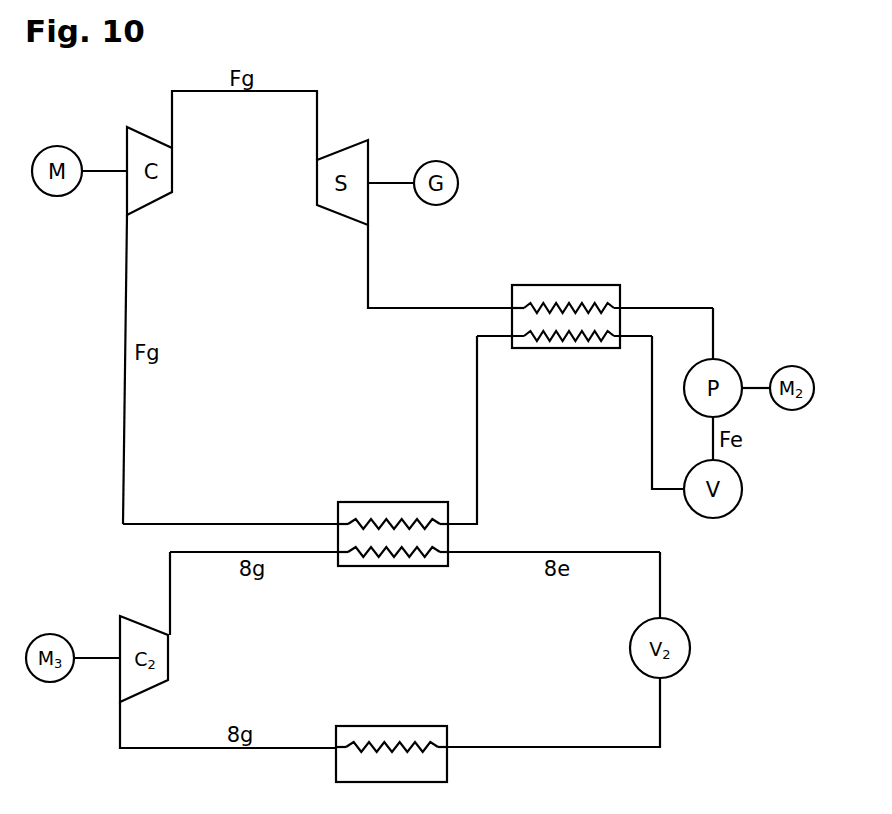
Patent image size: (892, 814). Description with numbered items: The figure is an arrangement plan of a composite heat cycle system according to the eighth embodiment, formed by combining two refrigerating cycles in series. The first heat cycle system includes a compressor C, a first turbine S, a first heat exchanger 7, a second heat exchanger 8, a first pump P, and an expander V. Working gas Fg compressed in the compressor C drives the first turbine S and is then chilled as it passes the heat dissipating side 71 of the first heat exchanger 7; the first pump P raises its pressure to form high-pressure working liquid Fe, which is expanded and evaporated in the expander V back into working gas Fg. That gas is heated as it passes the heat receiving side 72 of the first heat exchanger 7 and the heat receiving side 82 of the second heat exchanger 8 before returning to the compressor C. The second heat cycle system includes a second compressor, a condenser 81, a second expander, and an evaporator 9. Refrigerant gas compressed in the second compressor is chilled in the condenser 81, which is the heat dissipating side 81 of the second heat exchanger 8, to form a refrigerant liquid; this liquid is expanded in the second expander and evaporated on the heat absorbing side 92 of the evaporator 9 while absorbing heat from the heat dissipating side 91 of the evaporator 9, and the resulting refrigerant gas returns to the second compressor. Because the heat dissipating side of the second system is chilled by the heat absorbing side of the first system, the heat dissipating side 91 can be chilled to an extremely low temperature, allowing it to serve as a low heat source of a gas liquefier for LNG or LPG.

The first heat exchanger 7 is at (598, 285).
The heat dissipating side of the first heat exchanger 71 is at (549, 303).
The heat receiving side of the first heat exchanger 72 is at (556, 341).
The second heat exchanger 8 is at (410, 502).
The condenser 81 is at (400, 557).
The heat receiving side of the second heat exchanger 82 is at (367, 519).
The evaporator 9 is at (364, 726).
The heat dissipating side of the evaporator 91 is at (397, 768).
The heat absorbing side of the evaporator 92 is at (405, 742).